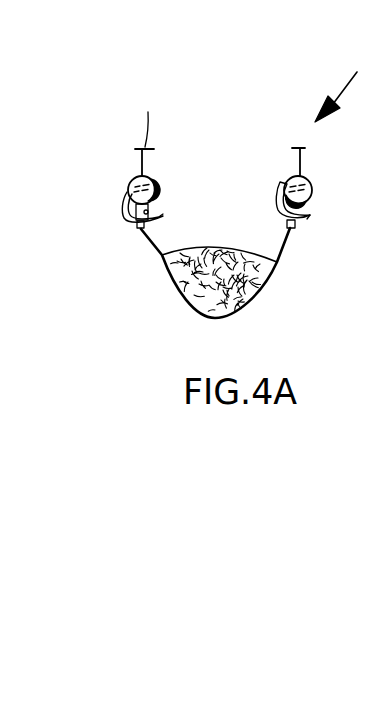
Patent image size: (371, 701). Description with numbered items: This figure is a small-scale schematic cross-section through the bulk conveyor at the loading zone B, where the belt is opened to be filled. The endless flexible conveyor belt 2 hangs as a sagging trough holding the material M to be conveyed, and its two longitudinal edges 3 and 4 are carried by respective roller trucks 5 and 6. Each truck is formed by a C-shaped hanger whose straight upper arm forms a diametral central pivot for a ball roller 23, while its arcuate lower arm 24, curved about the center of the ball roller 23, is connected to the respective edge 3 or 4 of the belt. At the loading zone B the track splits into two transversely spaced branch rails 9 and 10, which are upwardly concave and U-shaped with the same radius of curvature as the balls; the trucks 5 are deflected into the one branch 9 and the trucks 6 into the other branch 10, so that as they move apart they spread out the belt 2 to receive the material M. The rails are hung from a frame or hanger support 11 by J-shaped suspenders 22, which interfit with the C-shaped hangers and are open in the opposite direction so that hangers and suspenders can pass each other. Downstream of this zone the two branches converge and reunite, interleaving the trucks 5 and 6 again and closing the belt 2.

The conveyor belt 2 is at (262, 300).
The longitudinal edge 3 is at (152, 231).
The longitudinal edge 4 is at (289, 233).
The roller truck 5 is at (134, 213).
The roller truck 6 is at (283, 183).
The branch rail 9 is at (126, 226).
The branch rail 10 is at (305, 208).
The hanger support 11 is at (147, 135).
The J-shaped suspender 22 is at (143, 162).
The ball roller 23 is at (152, 178).
The arcuate lower arm 24 is at (160, 216).
The material M is at (238, 260).
The loading zone B is at (336, 87).